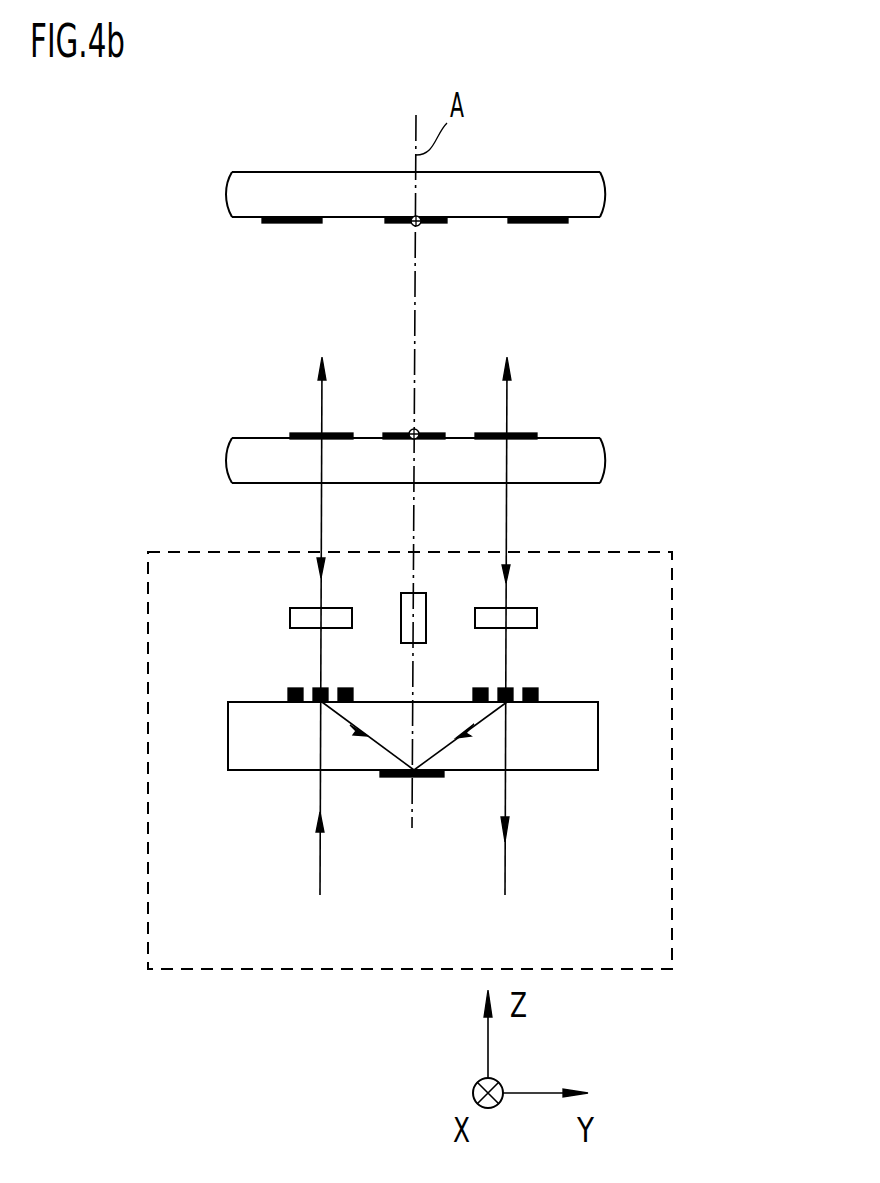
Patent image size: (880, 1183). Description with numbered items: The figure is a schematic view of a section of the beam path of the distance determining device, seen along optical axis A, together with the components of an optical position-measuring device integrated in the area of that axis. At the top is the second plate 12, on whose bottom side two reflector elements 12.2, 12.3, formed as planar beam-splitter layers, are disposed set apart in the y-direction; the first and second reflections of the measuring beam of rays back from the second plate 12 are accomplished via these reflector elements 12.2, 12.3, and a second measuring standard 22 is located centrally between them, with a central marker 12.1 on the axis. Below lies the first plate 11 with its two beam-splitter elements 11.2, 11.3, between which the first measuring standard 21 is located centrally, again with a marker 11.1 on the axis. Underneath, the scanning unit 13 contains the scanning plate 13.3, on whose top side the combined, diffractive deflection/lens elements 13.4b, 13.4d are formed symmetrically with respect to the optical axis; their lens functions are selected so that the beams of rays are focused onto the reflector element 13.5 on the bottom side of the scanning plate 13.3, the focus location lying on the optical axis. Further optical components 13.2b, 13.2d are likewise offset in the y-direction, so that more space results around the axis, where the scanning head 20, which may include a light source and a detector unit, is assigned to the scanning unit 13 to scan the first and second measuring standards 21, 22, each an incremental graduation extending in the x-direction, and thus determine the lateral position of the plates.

The first plate 11 is at (580, 468).
The central marker of second substrate 11.1 is at (420, 430).
The beam-splitter element 11.2 is at (308, 432).
The beam-splitter element 11.3 is at (517, 432).
The second plate 12 is at (580, 200).
The central marker of first substrate 12.1 is at (420, 225).
The reflector element 12.2 is at (278, 223).
The reflector element 12.3 is at (543, 223).
The scanning unit 13 is at (148, 835).
The optical component 13.2b is at (518, 617).
The optical component 13.2d is at (312, 617).
The scanning plate 13.3 is at (573, 735).
The combined diffractive deflection/lens element 13.4b is at (530, 690).
The combined diffractive deflection/lens element 13.4d is at (288, 690).
The reflector element 13.5 is at (427, 777).
The scanning head 20 is at (417, 617).
The first measuring standard 21 is at (397, 432).
The second measuring standard 22 is at (407, 223).